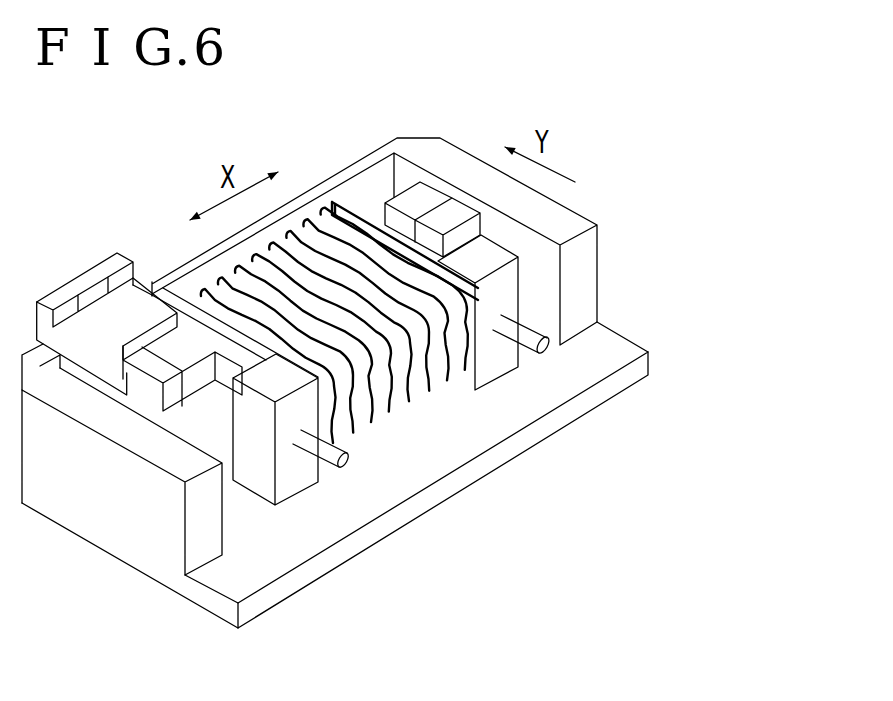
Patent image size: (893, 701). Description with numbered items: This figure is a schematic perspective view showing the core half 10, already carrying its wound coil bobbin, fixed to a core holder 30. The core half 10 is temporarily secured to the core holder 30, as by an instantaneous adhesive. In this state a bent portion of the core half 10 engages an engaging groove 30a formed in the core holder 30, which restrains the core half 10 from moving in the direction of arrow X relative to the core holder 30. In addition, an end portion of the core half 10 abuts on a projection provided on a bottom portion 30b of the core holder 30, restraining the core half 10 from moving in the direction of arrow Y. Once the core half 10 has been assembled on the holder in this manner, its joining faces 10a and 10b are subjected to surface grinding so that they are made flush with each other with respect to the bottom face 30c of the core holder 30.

The core half 10 is at (280, 292).
The joining face 10a is at (121, 256).
The joining face 10b is at (428, 197).
The core holder 30 is at (221, 580).
The engaging groove 30a is at (71, 367).
The bottom portion 30b is at (488, 432).
The bottom face 30c is at (367, 552).